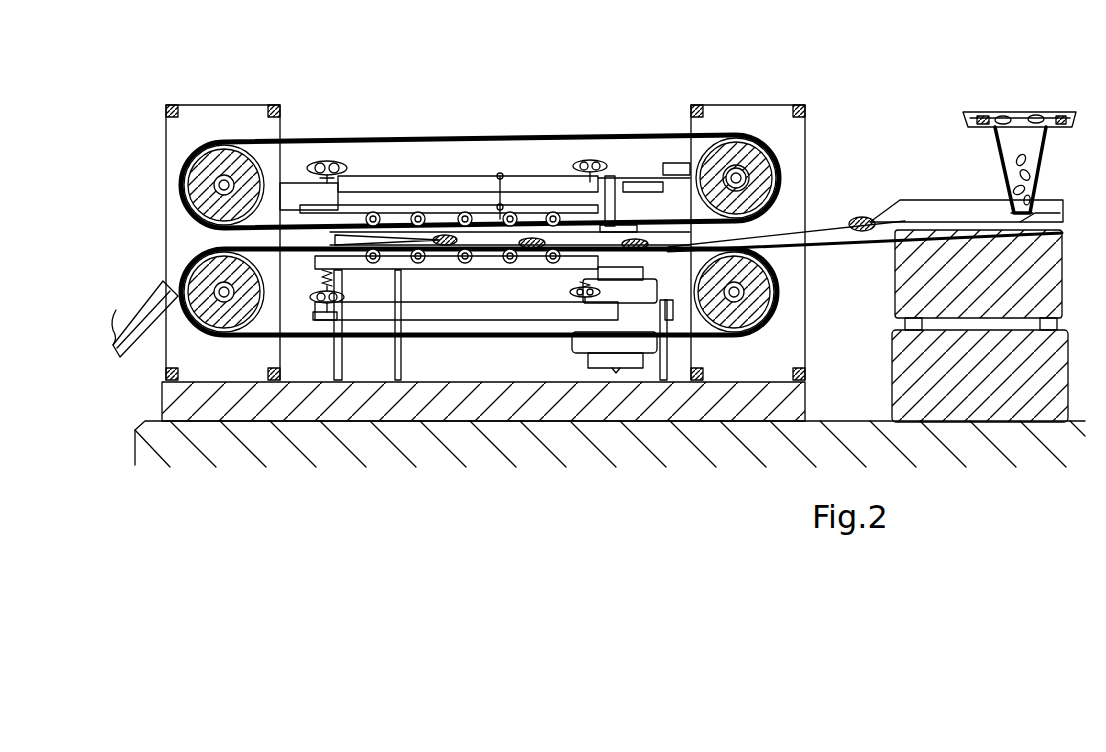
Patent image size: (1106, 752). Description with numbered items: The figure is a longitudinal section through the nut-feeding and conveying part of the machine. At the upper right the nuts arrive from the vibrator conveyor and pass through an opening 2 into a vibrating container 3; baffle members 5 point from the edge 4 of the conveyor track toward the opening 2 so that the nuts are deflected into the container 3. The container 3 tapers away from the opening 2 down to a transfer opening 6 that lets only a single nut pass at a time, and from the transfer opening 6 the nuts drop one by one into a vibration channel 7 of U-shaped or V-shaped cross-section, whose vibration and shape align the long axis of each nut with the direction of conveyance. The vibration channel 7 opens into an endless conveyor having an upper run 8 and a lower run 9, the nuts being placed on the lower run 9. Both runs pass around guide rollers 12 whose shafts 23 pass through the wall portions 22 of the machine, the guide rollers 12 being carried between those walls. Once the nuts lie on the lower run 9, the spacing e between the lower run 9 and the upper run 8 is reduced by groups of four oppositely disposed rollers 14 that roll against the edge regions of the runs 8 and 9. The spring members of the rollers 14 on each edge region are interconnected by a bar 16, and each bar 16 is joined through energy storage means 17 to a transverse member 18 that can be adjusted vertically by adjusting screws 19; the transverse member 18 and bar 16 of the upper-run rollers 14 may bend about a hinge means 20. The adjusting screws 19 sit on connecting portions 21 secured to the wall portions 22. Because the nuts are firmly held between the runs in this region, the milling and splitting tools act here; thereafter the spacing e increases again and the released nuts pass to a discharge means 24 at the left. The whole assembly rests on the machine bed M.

The opening 2 is at (1012, 112).
The vibrating container 3 is at (1047, 157).
The edge of the conveyor track 4 is at (1078, 122).
The baffle member 5 is at (1056, 112).
The transfer opening 6 is at (1040, 213).
The vibration channel 7 is at (840, 221).
The upper run 8 is at (626, 136).
The lower run 9 is at (705, 328).
The guide roller 12 is at (195, 180).
The roller 14 is at (553, 212).
The bar 16 is at (520, 264).
The energy storage means 17 is at (575, 288).
The transverse member 18 is at (472, 316).
The adjusting screw 19 is at (610, 175).
The hinge means 20 is at (498, 172).
The connecting portion 21 is at (293, 192).
The wall portion 22 is at (791, 163).
The shaft 23 is at (740, 170).
The discharge means 24 is at (130, 328).
The spacing e is at (267, 205).
The machine bed M is at (475, 445).